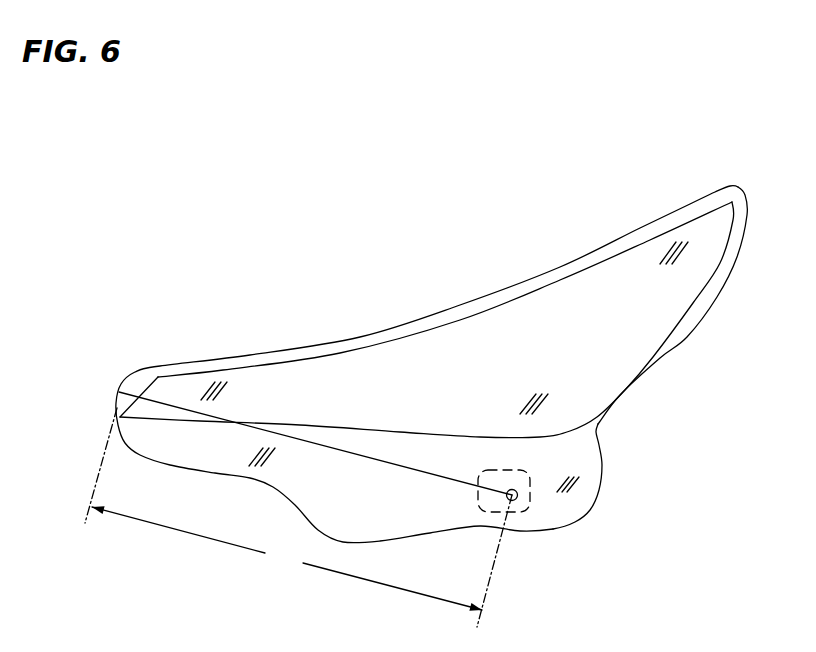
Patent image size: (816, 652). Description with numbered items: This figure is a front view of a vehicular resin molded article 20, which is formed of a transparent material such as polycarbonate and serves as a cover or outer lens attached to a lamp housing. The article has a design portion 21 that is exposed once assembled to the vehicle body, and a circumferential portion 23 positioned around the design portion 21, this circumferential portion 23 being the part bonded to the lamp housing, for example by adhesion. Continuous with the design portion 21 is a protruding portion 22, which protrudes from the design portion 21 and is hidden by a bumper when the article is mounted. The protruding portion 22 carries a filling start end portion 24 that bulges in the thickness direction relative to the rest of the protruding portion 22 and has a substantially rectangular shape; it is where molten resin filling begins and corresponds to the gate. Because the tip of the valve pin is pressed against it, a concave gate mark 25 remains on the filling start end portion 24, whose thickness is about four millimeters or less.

The vehicular resin molded article 20 is at (214, 205).
The design portion 21 is at (495, 325).
The protruding portion 22 is at (593, 473).
The circumferential portion 23 is at (715, 288).
The filling start end portion 24 is at (517, 512).
The gate mark 25 is at (518, 497).